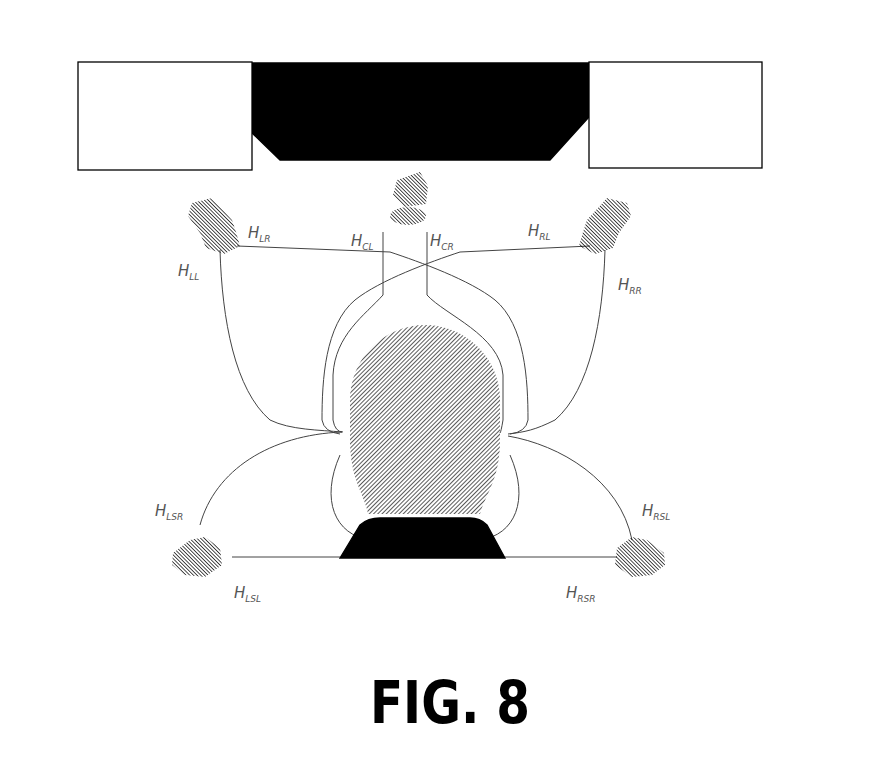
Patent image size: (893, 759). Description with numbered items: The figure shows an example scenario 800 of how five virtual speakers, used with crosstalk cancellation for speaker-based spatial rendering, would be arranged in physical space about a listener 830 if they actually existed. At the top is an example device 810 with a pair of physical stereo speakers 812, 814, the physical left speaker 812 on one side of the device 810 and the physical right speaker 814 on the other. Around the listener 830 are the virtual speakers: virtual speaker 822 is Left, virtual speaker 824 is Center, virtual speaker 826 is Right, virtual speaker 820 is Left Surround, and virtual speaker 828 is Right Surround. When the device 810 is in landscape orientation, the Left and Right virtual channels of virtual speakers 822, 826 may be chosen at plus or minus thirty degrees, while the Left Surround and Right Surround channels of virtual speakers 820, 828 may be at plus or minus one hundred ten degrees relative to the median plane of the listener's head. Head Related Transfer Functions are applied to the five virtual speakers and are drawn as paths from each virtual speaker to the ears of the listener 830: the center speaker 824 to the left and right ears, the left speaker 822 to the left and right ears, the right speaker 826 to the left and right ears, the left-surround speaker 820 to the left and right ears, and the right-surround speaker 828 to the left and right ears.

The example scenario 800 is at (143, 672).
The example device 810 is at (470, 63).
The physical stereo speaker 812 is at (186, 164).
The physical stereo speaker 814 is at (699, 162).
The virtual speaker 820 is at (180, 560).
The virtual speaker 822 is at (200, 227).
The virtual speaker 824 is at (415, 190).
The virtual speaker 826 is at (613, 220).
The virtual speaker 828 is at (650, 560).
The listener 830 is at (444, 450).